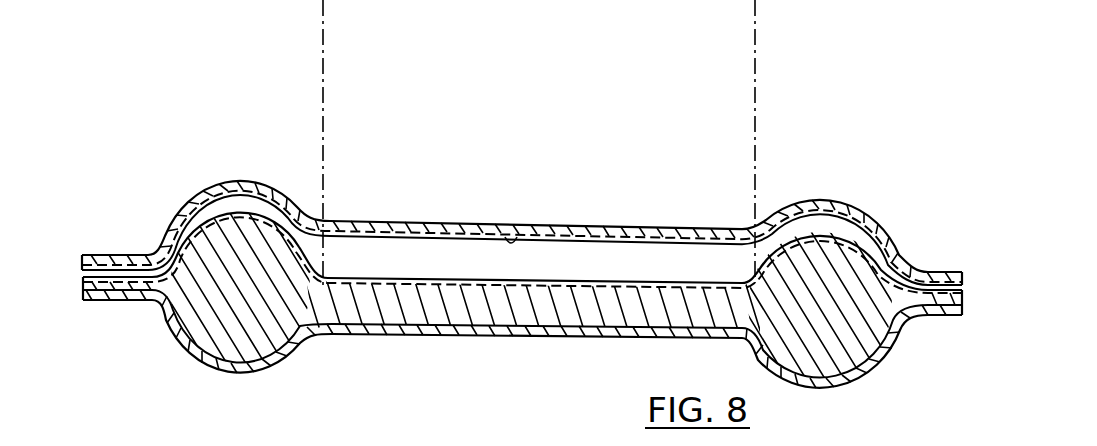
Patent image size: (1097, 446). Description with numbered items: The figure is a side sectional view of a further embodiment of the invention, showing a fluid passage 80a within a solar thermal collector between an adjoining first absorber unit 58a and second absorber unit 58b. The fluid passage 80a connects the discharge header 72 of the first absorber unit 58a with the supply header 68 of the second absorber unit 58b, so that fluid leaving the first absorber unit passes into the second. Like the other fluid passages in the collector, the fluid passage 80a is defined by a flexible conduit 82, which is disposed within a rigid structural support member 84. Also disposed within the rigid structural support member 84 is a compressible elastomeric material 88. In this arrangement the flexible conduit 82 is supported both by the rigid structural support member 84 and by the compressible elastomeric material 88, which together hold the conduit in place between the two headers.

The first absorber unit 58a is at (214, 14).
The second absorber unit 58b is at (861, 18).
The discharge header 72 is at (219, 163).
The supply header 68 is at (836, 175).
The fluid passage 80a is at (393, 257).
The flexible conduit 82 is at (538, 237).
The rigid structural support member 84 is at (687, 225).
The compressible elastomeric material 88 is at (565, 316).